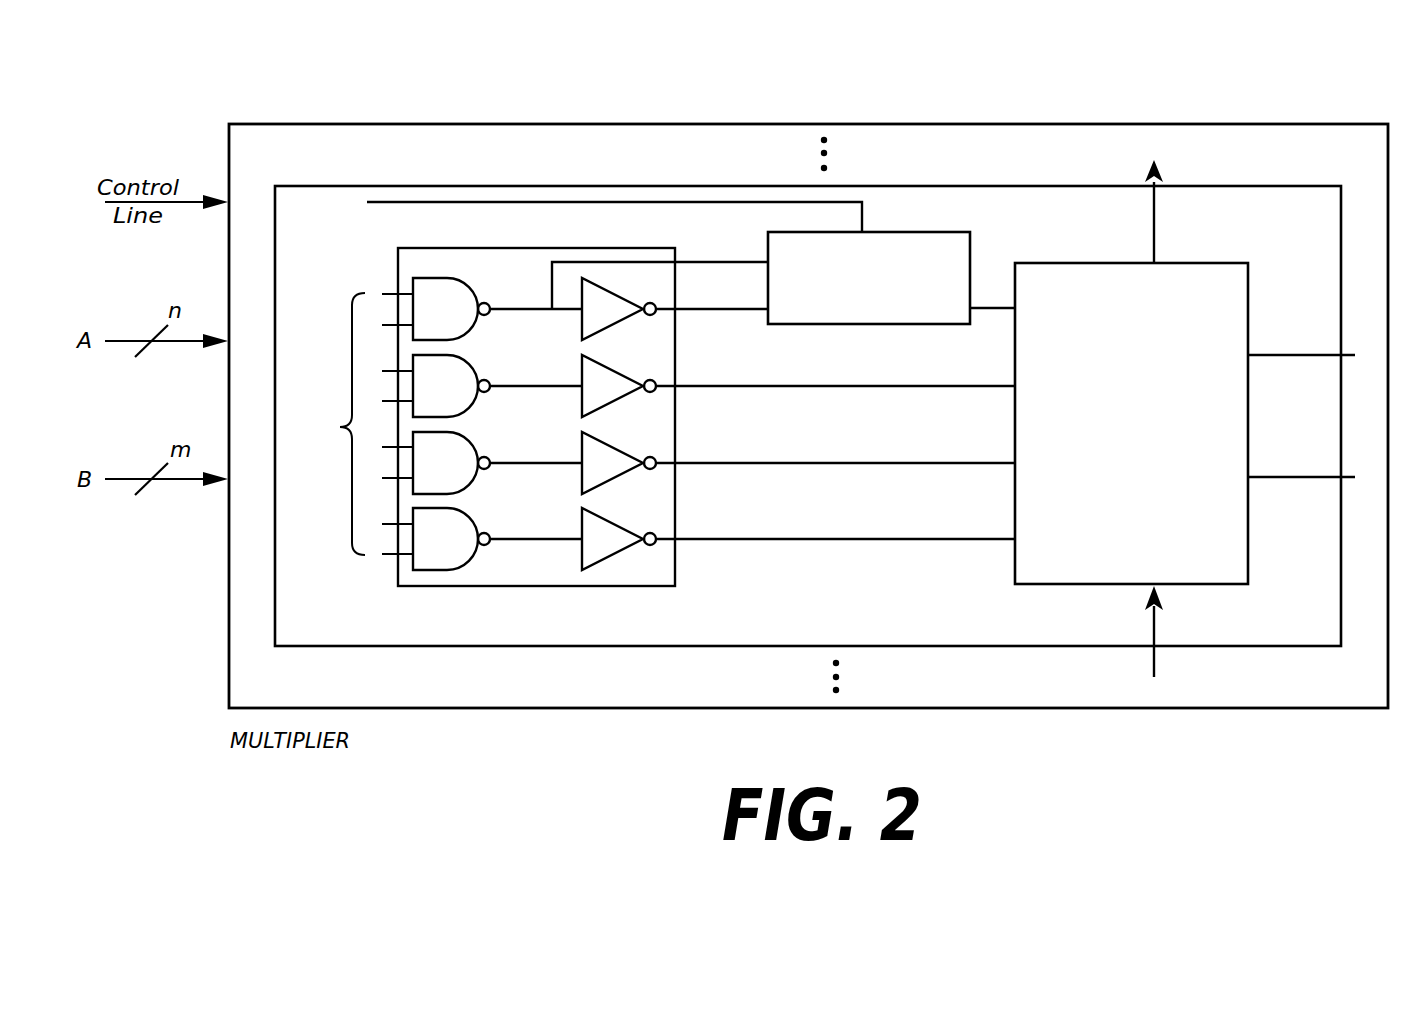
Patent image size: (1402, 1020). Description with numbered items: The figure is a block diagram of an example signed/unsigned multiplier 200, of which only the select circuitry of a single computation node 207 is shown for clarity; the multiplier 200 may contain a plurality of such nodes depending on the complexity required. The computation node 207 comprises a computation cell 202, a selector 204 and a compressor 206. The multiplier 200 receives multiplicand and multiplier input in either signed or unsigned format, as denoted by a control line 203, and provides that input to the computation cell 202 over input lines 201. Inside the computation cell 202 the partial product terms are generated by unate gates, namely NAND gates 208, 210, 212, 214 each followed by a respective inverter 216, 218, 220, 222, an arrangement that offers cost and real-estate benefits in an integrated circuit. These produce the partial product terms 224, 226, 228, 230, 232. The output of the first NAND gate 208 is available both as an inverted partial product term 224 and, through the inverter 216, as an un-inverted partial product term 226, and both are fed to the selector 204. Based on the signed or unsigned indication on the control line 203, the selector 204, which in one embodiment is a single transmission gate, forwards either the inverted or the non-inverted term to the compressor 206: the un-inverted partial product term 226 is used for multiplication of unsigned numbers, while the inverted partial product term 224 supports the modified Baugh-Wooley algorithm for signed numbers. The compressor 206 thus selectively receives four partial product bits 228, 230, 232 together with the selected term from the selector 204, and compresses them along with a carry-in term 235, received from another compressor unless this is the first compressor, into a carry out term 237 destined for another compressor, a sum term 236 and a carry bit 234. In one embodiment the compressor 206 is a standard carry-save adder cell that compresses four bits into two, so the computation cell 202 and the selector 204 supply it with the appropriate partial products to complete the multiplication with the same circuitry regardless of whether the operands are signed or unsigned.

The multiplier 200 is at (1308, 138).
The input lines 201 is at (325, 436).
The computation cell 202 is at (553, 579).
The control line 203 is at (676, 203).
The selector 204 is at (950, 316).
The compressor 206 is at (1235, 576).
The computation node 207 is at (1278, 204).
The NAND gate 208 is at (497, 309).
The NAND gate 210 is at (497, 386).
The NAND gate 212 is at (497, 463).
The NAND gate 214 is at (497, 539).
The inverter 216 is at (625, 326).
The inverter 218 is at (623, 402).
The inverter 220 is at (623, 478).
The inverter 222 is at (612, 562).
The inverted partial product term 224 is at (688, 262).
The un-inverted partial product term 226 is at (688, 309).
The partial product bit 228 is at (688, 386).
The partial product bit 230 is at (688, 463).
The partial product bit 232 is at (688, 539).
The carry bit 234 is at (1258, 355).
The sum term 236 is at (1258, 477).
The carry-in term 235 is at (1154, 628).
The carry out term 237 is at (1154, 232).